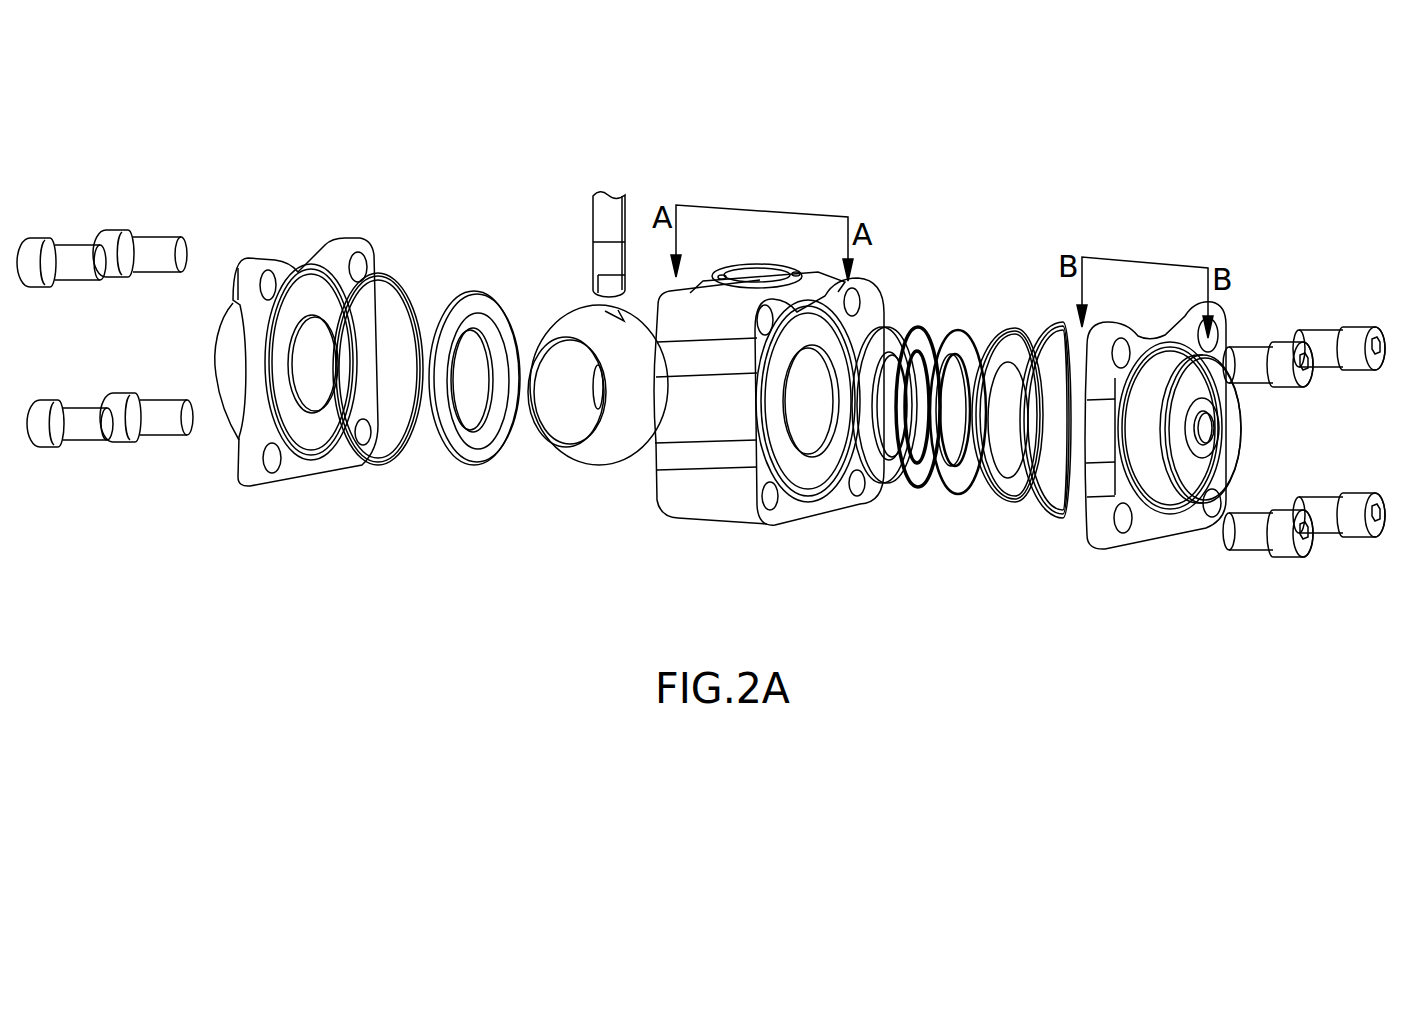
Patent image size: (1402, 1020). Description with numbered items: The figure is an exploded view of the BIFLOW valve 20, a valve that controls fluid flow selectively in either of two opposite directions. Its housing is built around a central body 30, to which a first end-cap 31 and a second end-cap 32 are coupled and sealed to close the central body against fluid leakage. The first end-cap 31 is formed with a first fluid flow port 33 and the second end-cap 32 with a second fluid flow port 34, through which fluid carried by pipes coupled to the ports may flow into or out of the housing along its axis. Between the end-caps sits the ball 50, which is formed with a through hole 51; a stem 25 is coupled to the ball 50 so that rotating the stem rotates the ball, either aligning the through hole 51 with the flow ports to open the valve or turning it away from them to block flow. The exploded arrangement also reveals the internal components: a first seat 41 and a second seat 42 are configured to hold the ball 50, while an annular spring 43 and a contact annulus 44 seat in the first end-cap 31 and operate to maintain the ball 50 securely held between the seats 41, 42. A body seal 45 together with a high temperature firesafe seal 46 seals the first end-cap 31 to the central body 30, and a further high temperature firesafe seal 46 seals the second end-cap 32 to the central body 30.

The BIFLOW valve 20 is at (388, 132).
The stem 25 is at (609, 244).
The central body 30 is at (723, 417).
The first end-cap 31 is at (1143, 538).
The second end-cap 32 is at (255, 472).
The first fluid flow port 33 is at (1203, 425).
The second fluid flow port 34 is at (306, 367).
The first seat 41 is at (880, 330).
The second seat 42 is at (463, 295).
The annular spring 43 is at (968, 333).
The contact annulus 44 is at (920, 330).
The body seal 45 is at (998, 492).
The high temperature firesafe seal 46 is at (385, 272).
The ball 50 is at (642, 396).
The through hole 51 is at (572, 406).